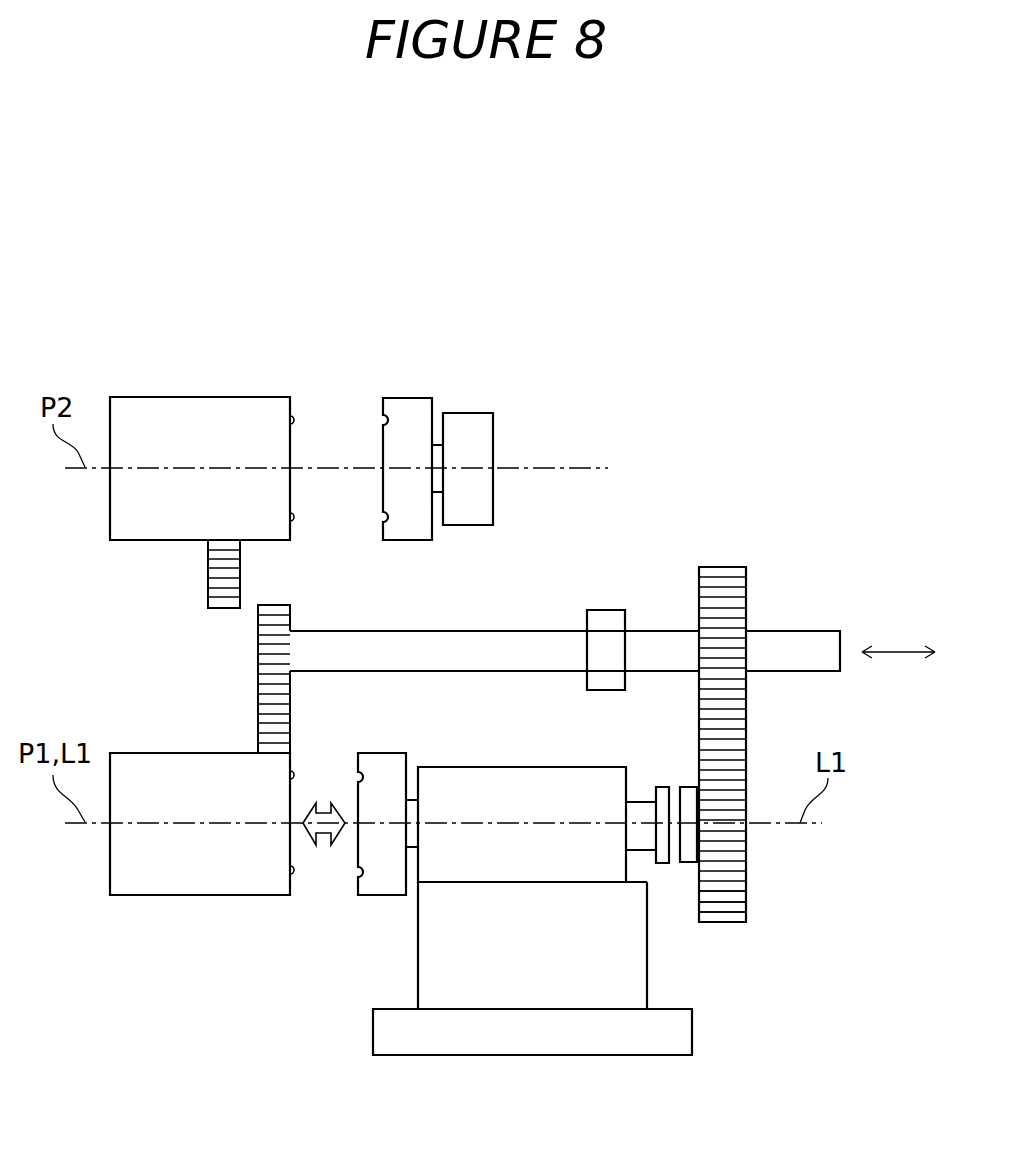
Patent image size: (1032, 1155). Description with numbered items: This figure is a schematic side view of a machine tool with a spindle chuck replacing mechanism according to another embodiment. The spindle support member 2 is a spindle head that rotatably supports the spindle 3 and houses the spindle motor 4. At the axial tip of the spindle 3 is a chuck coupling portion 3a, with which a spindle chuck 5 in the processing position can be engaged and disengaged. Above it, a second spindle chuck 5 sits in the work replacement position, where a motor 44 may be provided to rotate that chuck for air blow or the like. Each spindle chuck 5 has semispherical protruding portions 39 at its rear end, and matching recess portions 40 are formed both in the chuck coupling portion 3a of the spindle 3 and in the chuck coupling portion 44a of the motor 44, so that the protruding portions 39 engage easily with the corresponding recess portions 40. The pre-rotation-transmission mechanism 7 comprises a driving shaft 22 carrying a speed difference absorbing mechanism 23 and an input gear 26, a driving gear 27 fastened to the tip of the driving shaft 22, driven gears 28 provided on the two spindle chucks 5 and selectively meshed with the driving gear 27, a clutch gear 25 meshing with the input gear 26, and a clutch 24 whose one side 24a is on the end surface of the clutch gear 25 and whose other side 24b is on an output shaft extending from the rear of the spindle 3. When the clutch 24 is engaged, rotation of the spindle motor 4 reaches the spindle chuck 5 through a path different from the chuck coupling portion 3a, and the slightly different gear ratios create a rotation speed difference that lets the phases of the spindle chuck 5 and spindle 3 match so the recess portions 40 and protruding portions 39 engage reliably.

The spindle support member 2 is at (542, 988).
The spindle 3 is at (410, 835).
The chuck coupling portion 3a is at (388, 753).
The spindle motor 4 is at (530, 809).
The spindle chuck 5 is at (198, 397).
The pre-rotation-transmission mechanism 7 is at (612, 709).
The driving shaft 22 is at (478, 631).
The speed difference absorbing mechanism 23 is at (604, 610).
The clutch 24 is at (664, 838).
The one side of the clutch 24a is at (689, 787).
The other side of the clutch 24b is at (664, 787).
The clutch gear 25 is at (746, 905).
The input gear 26 is at (746, 697).
The driving gear 27 is at (258, 645).
The driven gear 28 is at (208, 583).
The protruding portion 39 is at (299, 420).
The recess portion 40 is at (383, 419).
The motor 44 is at (498, 376).
The chuck coupling portion of the motor 44a is at (413, 397).